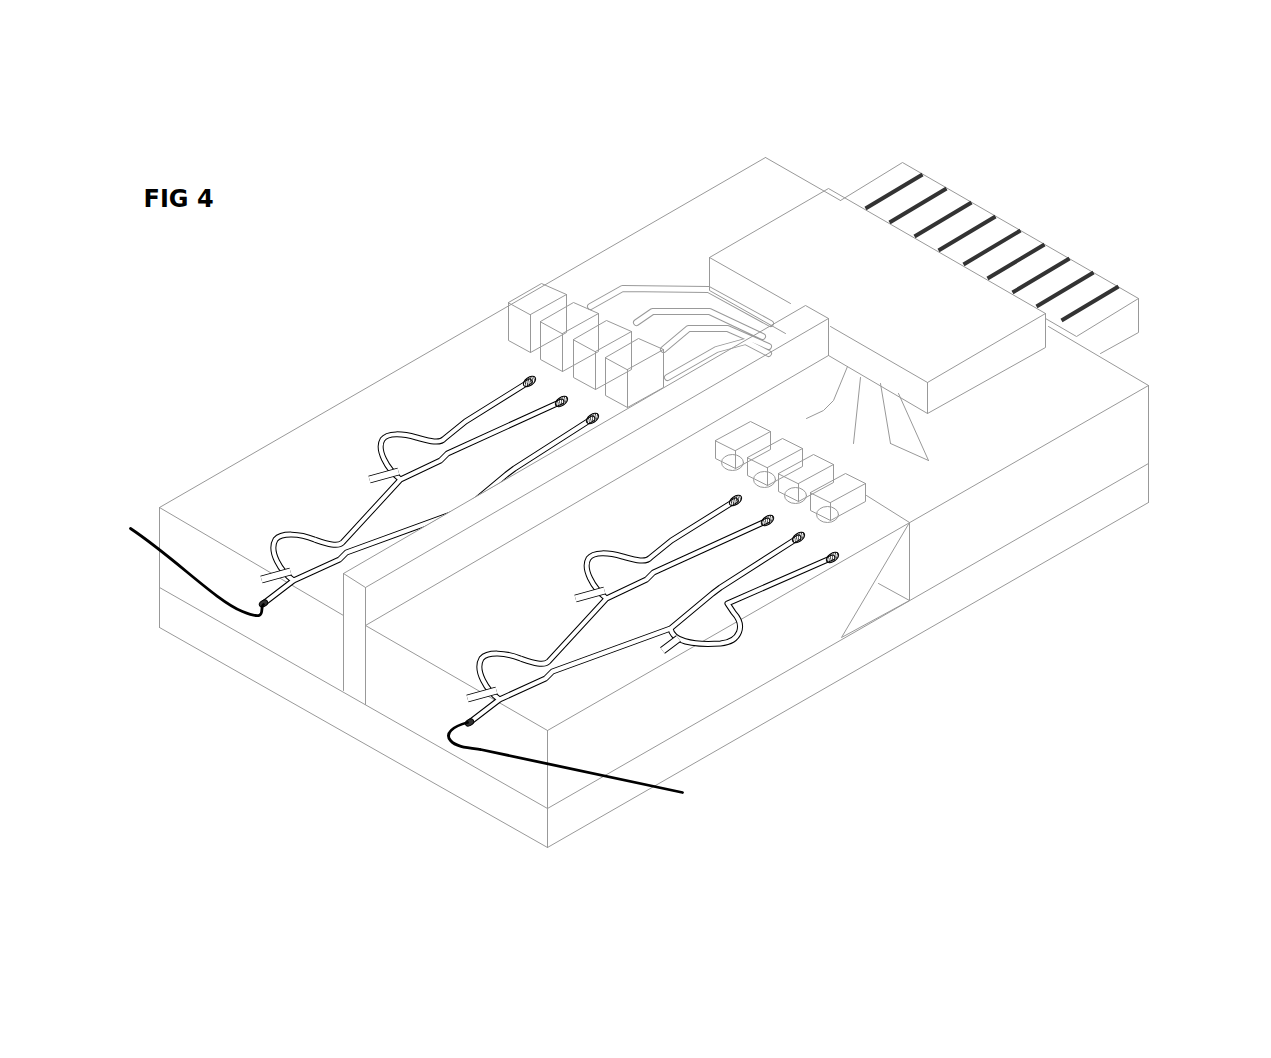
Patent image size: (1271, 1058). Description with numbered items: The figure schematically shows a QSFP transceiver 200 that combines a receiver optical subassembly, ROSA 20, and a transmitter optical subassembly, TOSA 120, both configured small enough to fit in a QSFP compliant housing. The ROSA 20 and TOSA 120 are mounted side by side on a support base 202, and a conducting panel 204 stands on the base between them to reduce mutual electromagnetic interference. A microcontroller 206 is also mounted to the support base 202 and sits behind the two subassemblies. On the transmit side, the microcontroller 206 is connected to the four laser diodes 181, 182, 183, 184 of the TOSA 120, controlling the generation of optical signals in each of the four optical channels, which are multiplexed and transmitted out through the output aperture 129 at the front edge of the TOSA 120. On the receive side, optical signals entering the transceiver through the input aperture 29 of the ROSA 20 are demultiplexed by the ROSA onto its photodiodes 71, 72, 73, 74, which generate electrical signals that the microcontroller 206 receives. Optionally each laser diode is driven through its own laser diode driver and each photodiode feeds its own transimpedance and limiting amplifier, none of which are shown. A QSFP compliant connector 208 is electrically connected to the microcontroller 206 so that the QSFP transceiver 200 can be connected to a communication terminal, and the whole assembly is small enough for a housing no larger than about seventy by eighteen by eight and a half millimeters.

The QSFP transceiver 200 is at (1121, 173).
The support base 202 is at (233, 660).
The conducting panel 204 is at (350, 648).
The microcontroller 206 is at (906, 305).
The QSFP compliant connector 208 is at (1078, 260).
The TOSA 120 is at (263, 421).
The ROSA 20 is at (806, 636).
The output aperture 129 is at (179, 565).
The input aperture 29 is at (578, 762).
The laser diode 181 is at (535, 282).
The laser diode 182 is at (575, 310).
The laser diode 183 is at (612, 328).
The laser diode 184 is at (645, 342).
The photodiode 71 is at (850, 502).
The photodiode 72 is at (807, 469).
The photodiode 73 is at (782, 445).
The photodiode 74 is at (745, 430).